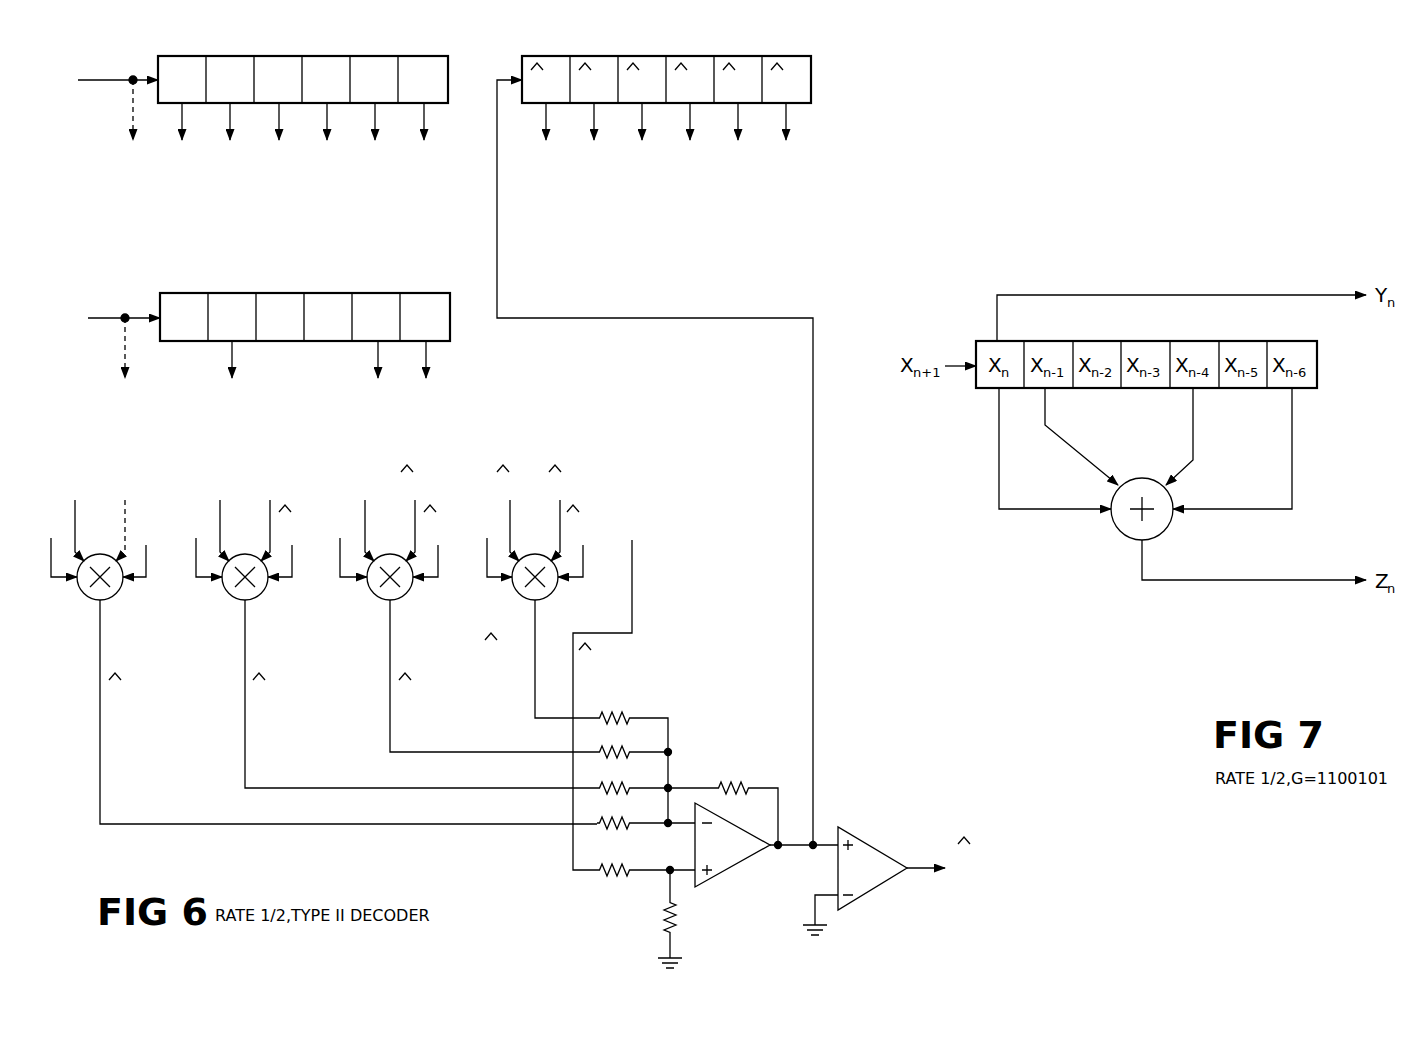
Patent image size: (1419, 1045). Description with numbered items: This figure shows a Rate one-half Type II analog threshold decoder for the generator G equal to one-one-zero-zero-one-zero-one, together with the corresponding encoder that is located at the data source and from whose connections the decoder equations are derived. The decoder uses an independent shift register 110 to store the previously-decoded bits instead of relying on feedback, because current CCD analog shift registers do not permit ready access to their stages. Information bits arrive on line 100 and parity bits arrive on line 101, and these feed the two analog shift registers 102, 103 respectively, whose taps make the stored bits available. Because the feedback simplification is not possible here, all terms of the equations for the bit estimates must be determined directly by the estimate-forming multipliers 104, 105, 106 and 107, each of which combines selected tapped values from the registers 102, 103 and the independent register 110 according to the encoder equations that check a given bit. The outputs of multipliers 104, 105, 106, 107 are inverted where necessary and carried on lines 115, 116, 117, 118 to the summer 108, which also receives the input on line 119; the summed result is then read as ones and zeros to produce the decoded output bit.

The information bit line 100 is at (114, 82).
The parity bit line 101 is at (111, 321).
The shift register 102 is at (376, 112).
The shift register 103 is at (426, 370).
The multiplier 104 is at (110, 602).
The multiplier 105 is at (252, 602).
The multiplier 106 is at (395, 602).
The multiplier 107 is at (553, 590).
The summer 108 is at (735, 868).
The independent shift register 110 is at (738, 116).
The multiplier output line 115 is at (148, 822).
The multiplier output line 116 is at (284, 786).
The multiplier output line 117 is at (409, 750).
The multiplier output line 118 is at (535, 698).
The Yn input line 119 is at (573, 706).